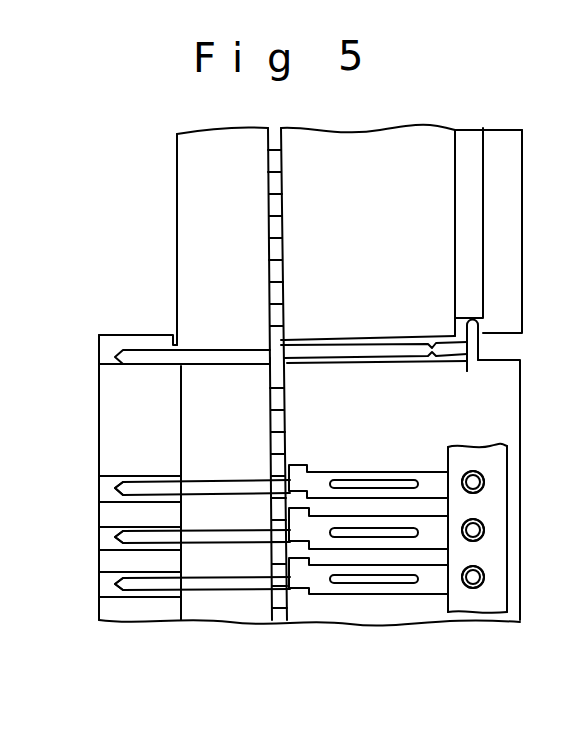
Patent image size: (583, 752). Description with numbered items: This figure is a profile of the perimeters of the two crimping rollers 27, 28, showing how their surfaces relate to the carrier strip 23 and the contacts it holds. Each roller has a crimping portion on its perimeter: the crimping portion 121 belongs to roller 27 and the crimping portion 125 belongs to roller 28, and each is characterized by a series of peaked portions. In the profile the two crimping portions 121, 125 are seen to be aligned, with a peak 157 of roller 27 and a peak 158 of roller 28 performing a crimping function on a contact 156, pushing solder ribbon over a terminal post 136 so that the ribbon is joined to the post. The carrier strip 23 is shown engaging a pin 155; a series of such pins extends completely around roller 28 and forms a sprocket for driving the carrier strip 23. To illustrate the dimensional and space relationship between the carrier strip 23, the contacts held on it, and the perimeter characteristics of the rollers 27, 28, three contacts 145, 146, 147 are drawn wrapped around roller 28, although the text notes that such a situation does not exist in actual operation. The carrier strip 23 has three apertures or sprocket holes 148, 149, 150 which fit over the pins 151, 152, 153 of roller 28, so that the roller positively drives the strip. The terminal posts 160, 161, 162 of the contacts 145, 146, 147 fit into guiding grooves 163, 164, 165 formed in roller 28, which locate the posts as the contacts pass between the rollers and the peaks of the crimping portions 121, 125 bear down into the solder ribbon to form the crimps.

The carrier strip 23 is at (484, 348).
The crimping roller 27 is at (370, 232).
The crimping roller 28 is at (393, 446).
The crimping portion 121 is at (283, 156).
The crimping portion 125 is at (285, 410).
The terminal post 136 is at (200, 350).
The contact 145 is at (355, 594).
The contact 146 is at (323, 546).
The contact 147 is at (323, 496).
The sprocket hole 148 is at (473, 578).
The sprocket hole 149 is at (481, 534).
The sprocket hole 150 is at (473, 483).
The pin 151 is at (477, 582).
The pin 152 is at (474, 530).
The pin 153 is at (484, 480).
The pin 155 is at (471, 350).
The contact 156 is at (363, 344).
The peak 157 is at (284, 345).
The peak 158 is at (271, 366).
The terminal post 160 is at (145, 583).
The terminal post 161 is at (168, 536).
The terminal post 162 is at (168, 488).
The guiding groove 163 is at (113, 584).
The guiding groove 164 is at (113, 537).
The guiding groove 165 is at (113, 488).